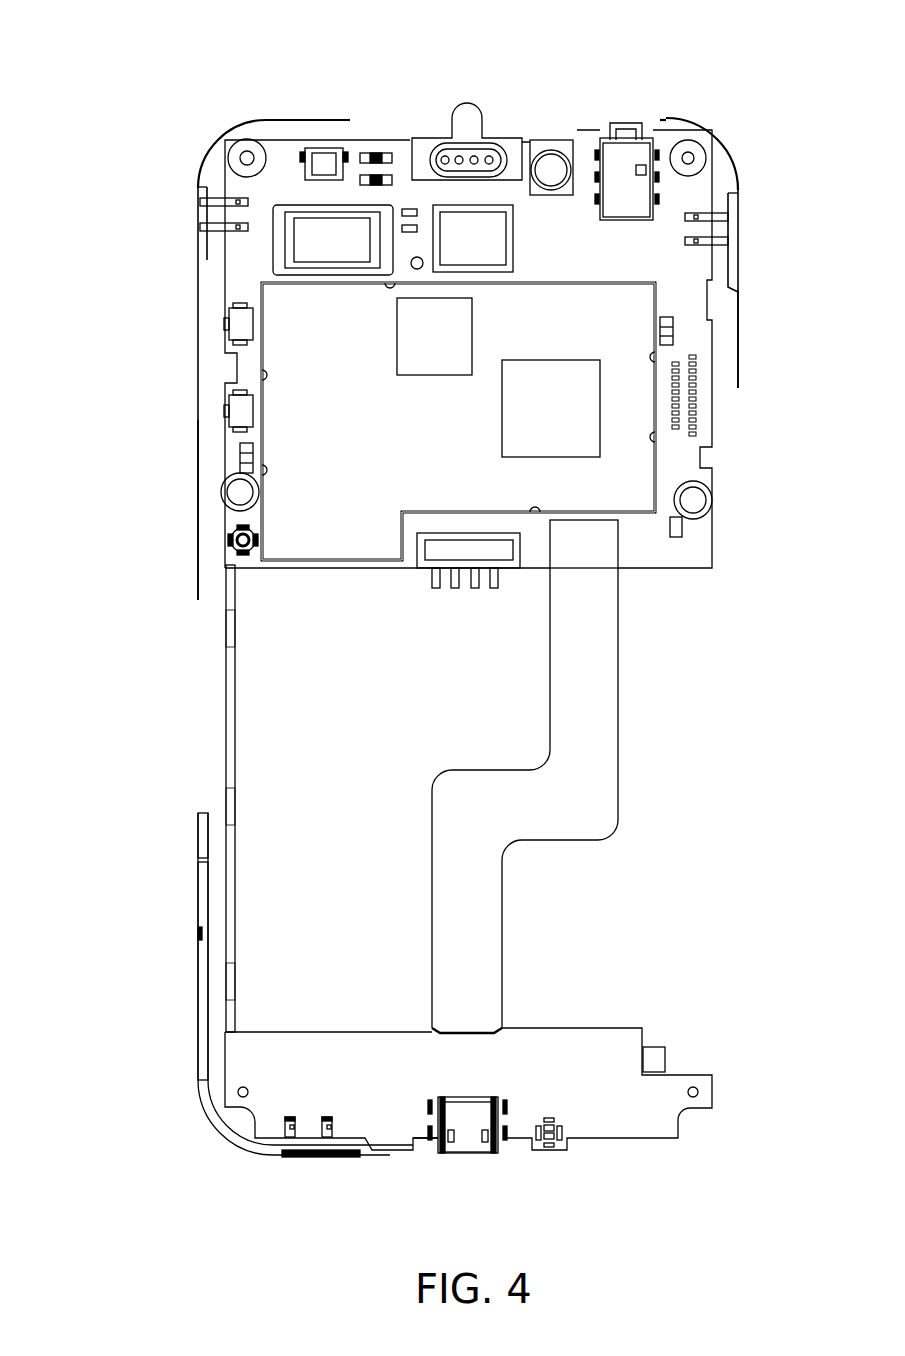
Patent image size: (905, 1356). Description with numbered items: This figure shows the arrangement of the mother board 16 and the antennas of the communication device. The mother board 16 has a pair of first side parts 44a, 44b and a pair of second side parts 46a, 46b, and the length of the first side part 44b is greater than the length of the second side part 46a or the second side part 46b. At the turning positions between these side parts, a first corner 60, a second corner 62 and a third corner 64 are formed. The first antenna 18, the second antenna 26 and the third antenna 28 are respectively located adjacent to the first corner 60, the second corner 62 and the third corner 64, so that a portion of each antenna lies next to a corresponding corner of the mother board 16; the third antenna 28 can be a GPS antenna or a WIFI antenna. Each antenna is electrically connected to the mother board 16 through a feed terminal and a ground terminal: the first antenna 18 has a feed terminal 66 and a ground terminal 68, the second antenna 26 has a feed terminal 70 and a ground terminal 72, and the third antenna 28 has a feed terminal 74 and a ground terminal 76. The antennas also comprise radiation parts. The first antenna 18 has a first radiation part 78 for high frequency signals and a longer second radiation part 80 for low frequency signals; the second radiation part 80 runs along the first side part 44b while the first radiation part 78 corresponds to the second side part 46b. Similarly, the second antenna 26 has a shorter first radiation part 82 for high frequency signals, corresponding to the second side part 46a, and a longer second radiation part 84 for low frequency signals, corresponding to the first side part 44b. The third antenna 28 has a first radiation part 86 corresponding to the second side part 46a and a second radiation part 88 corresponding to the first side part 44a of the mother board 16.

The mother board 16 is at (98, 68).
The first antenna 18 is at (183, 1068).
The second antenna 26 is at (188, 176).
The third antenna 28 is at (748, 185).
The first side part 44a is at (728, 484).
The first side part 44b is at (212, 699).
The second side part 46a is at (397, 104).
The second side part 46b is at (554, 1163).
The first corner 60 is at (232, 1123).
The second corner 62 is at (244, 154).
The third corner 64 is at (698, 153).
The feed terminal 66 is at (324, 1137).
The ground terminal 68 is at (289, 1137).
The feed terminal 70 is at (220, 201).
The ground terminal 72 is at (220, 227).
The feed terminal 74 is at (713, 214).
The ground terminal 76 is at (717, 238).
The first radiation part 78 is at (362, 1150).
The second radiation part 80 is at (203, 977).
The first radiation part 82 is at (290, 119).
The second radiation part 84 is at (197, 540).
The first radiation part 86 is at (670, 117).
The second radiation part 88 is at (737, 320).